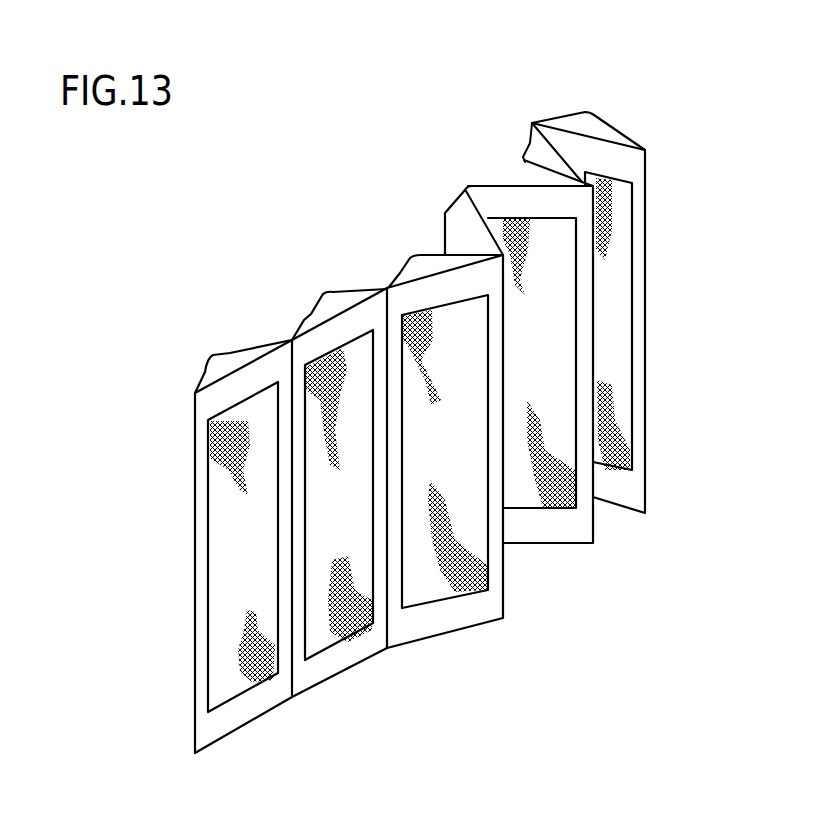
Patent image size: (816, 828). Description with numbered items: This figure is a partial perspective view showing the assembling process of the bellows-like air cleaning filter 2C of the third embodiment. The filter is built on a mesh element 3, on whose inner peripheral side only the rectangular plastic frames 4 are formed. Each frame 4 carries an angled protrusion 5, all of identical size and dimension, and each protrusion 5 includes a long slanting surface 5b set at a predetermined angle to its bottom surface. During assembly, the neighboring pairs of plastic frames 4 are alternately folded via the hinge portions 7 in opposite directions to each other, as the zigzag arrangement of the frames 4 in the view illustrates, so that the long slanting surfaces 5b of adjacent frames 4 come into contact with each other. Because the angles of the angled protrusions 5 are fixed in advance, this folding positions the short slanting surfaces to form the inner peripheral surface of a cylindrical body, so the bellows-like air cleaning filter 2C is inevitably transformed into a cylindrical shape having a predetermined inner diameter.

The bellows-like air cleaning filter 2C is at (536, 97).
The mesh element 3 is at (613, 305).
The plastic frame 4 is at (520, 148).
The angled protrusion 5 is at (423, 270).
The long slanting surface 5b is at (230, 353).
The hinge portion 7 is at (387, 620).